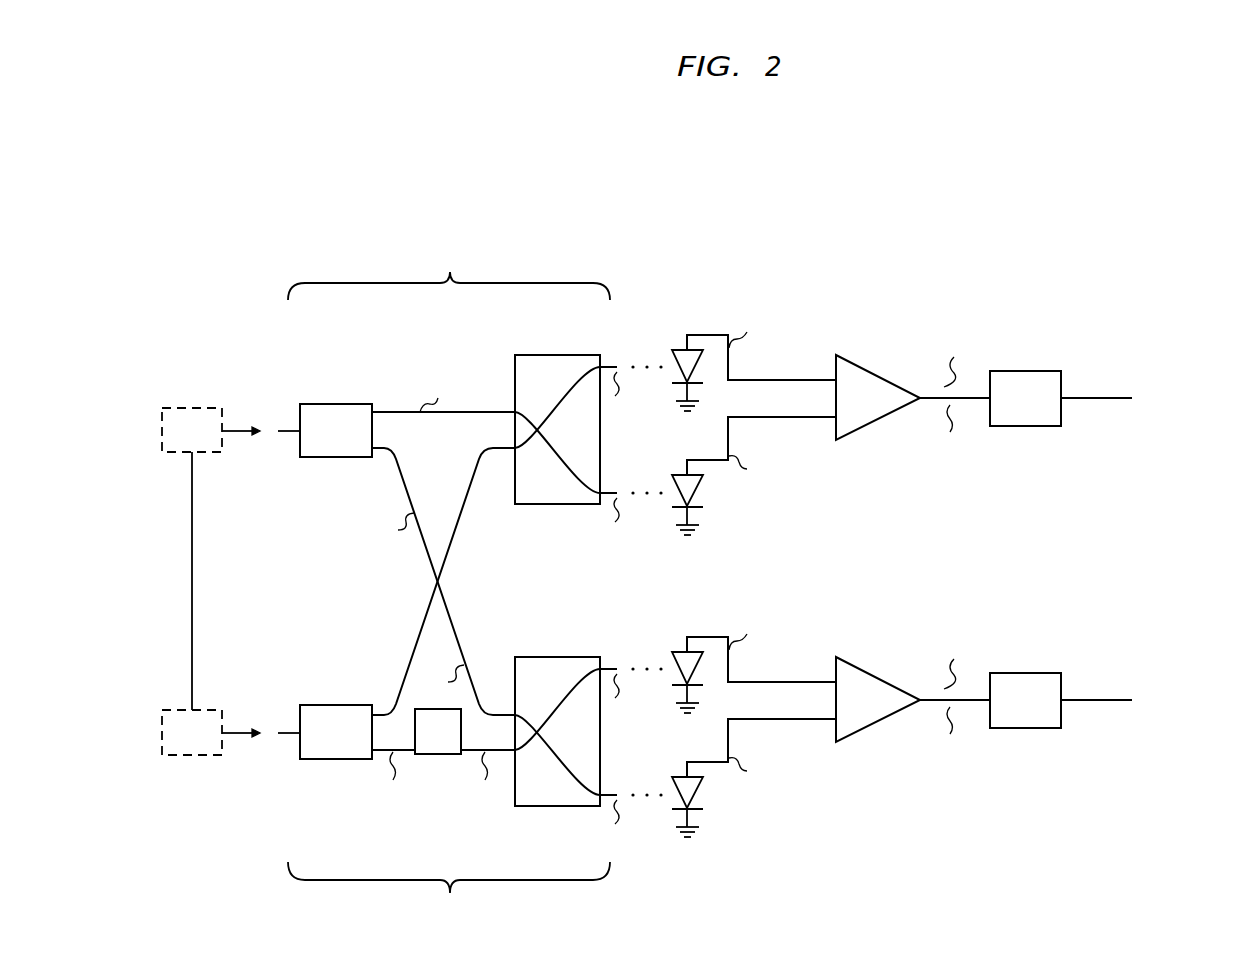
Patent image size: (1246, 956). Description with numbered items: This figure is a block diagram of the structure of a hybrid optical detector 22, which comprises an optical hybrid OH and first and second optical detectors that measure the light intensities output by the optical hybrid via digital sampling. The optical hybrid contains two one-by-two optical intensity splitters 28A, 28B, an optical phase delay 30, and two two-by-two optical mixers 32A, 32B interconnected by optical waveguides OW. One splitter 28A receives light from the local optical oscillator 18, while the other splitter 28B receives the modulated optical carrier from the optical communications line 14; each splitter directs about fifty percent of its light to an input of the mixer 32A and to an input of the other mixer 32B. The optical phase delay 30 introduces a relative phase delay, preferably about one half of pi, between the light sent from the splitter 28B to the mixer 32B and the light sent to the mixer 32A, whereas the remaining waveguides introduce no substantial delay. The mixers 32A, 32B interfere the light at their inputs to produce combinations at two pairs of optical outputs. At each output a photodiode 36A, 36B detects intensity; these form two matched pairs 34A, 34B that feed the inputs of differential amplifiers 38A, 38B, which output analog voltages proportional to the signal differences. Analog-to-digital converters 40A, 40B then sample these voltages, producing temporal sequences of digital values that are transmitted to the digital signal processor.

The hybrid optical detector 22 is at (902, 205).
The local optical oscillator 18 is at (204, 444).
The optical communications line 14 is at (204, 746).
The 1×2 optical intensity splitter 28A is at (343, 442).
The 1×2 optical intensity splitter 28B is at (343, 744).
The optical phase delay 30 is at (450, 744).
The 2×2 optical mixer 32A is at (544, 505).
The 2×2 optical mixer 32B is at (544, 807).
The matched pair of photodiodes 34A is at (728, 390).
The matched pair of photodiodes 34B is at (728, 692).
The photodiode 36A is at (674, 349).
The photodiode 36B is at (674, 651).
The differential amplifier 38A is at (868, 411).
The differential amplifier 38B is at (868, 713).
The analog-to-digital converter 40A is at (1048, 426).
The analog-to-digital converter 40B is at (1048, 728).